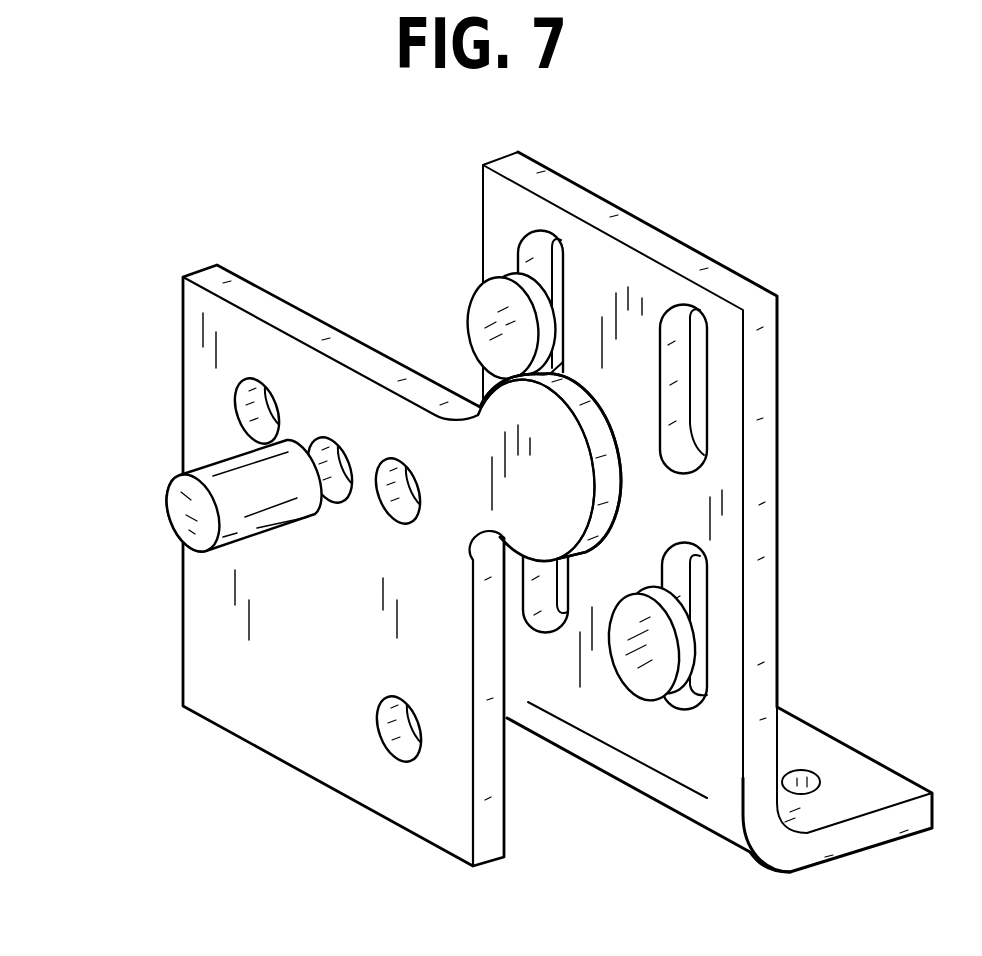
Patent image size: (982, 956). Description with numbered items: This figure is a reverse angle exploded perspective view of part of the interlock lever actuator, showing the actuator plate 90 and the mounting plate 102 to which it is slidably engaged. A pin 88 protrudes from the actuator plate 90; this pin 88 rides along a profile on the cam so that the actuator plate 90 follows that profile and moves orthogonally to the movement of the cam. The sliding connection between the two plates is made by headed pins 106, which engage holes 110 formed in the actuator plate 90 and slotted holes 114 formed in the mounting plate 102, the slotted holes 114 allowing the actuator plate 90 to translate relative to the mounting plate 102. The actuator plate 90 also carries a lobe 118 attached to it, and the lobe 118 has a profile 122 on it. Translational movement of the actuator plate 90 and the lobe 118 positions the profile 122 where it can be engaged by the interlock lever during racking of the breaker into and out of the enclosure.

The actuator plate 90 is at (197, 268).
The mounting plate 102 is at (683, 240).
The headed pins 106 is at (467, 313).
The holes 110 is at (237, 398).
The slotted holes 114 is at (566, 295).
The lobe 118 is at (618, 495).
The profile 122 is at (588, 428).
The pin 88 is at (213, 468).